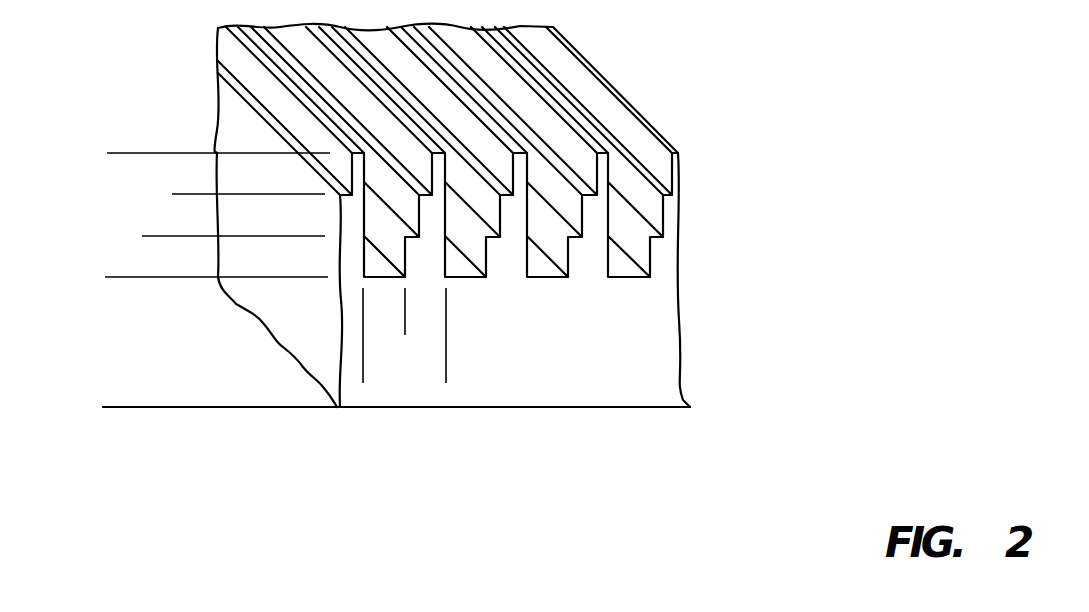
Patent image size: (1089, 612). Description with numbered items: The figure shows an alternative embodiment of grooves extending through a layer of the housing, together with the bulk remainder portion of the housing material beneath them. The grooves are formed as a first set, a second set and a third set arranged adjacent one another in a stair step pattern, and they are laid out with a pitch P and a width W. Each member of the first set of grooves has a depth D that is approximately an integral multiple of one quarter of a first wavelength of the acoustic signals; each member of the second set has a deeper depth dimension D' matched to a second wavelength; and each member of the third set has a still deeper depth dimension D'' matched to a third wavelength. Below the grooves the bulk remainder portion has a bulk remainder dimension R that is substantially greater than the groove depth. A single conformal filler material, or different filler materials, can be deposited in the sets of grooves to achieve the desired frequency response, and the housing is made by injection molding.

The depth of first set of grooves D is at (218, 181).
The depth dimension of second set of grooves D' is at (228, 194).
The depth dimension of third set of grooves D'' is at (206, 215).
The bulk remainder dimension R is at (121, 277).
The width of grooves W is at (467, 323).
The pitch of grooves P is at (446, 375).